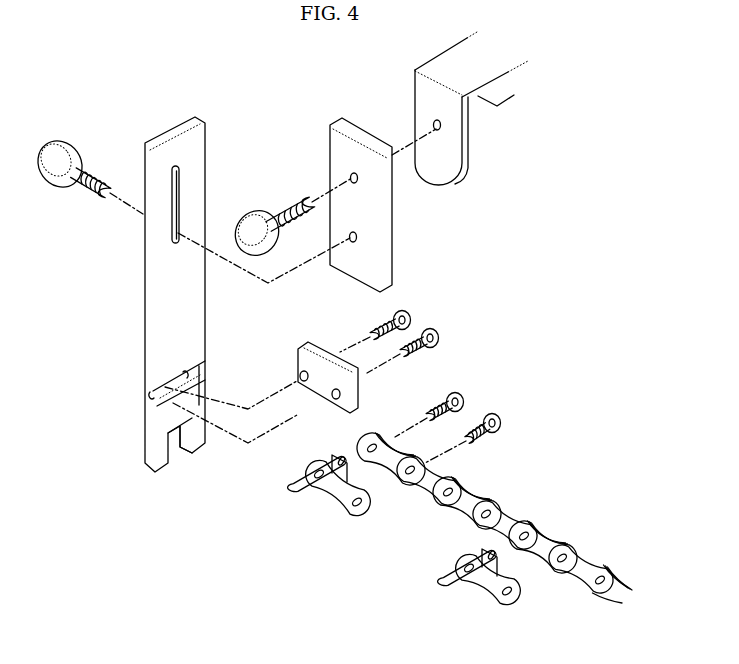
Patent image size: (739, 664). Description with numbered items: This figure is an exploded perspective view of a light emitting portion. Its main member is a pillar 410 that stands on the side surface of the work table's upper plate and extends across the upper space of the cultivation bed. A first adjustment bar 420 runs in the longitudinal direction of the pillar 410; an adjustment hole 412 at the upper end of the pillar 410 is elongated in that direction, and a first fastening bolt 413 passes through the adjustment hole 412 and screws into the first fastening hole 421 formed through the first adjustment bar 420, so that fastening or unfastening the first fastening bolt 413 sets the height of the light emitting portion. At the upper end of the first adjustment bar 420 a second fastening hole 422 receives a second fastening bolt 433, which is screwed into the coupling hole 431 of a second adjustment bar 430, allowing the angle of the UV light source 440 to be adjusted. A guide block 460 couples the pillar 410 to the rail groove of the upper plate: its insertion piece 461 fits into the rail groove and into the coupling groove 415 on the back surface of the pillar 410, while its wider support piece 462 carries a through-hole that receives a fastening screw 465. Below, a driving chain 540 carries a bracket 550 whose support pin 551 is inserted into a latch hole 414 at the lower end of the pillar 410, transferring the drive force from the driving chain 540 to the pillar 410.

The pillar 410 is at (168, 308).
The adjustment hole 412 is at (173, 228).
The first fastening bolt 413 is at (63, 182).
The latch hole 414 is at (175, 450).
The coupling groove 415 is at (156, 402).
The first adjustment bar 420 is at (389, 211).
The first fastening hole 421 is at (355, 242).
The second fastening hole 422 is at (349, 178).
The second adjustment bar 430 is at (427, 62).
The coupling hole 431 is at (437, 127).
The second fastening bolt 433 is at (258, 216).
The UV light source 440 is at (500, 97).
The guide block 460 is at (310, 343).
The insertion piece 461 is at (298, 363).
The support piece 462 is at (302, 348).
The fastening screw 465 is at (430, 318).
The driving chain 540 is at (466, 508).
The bracket 550 is at (490, 588).
The support pin 551 is at (462, 583).